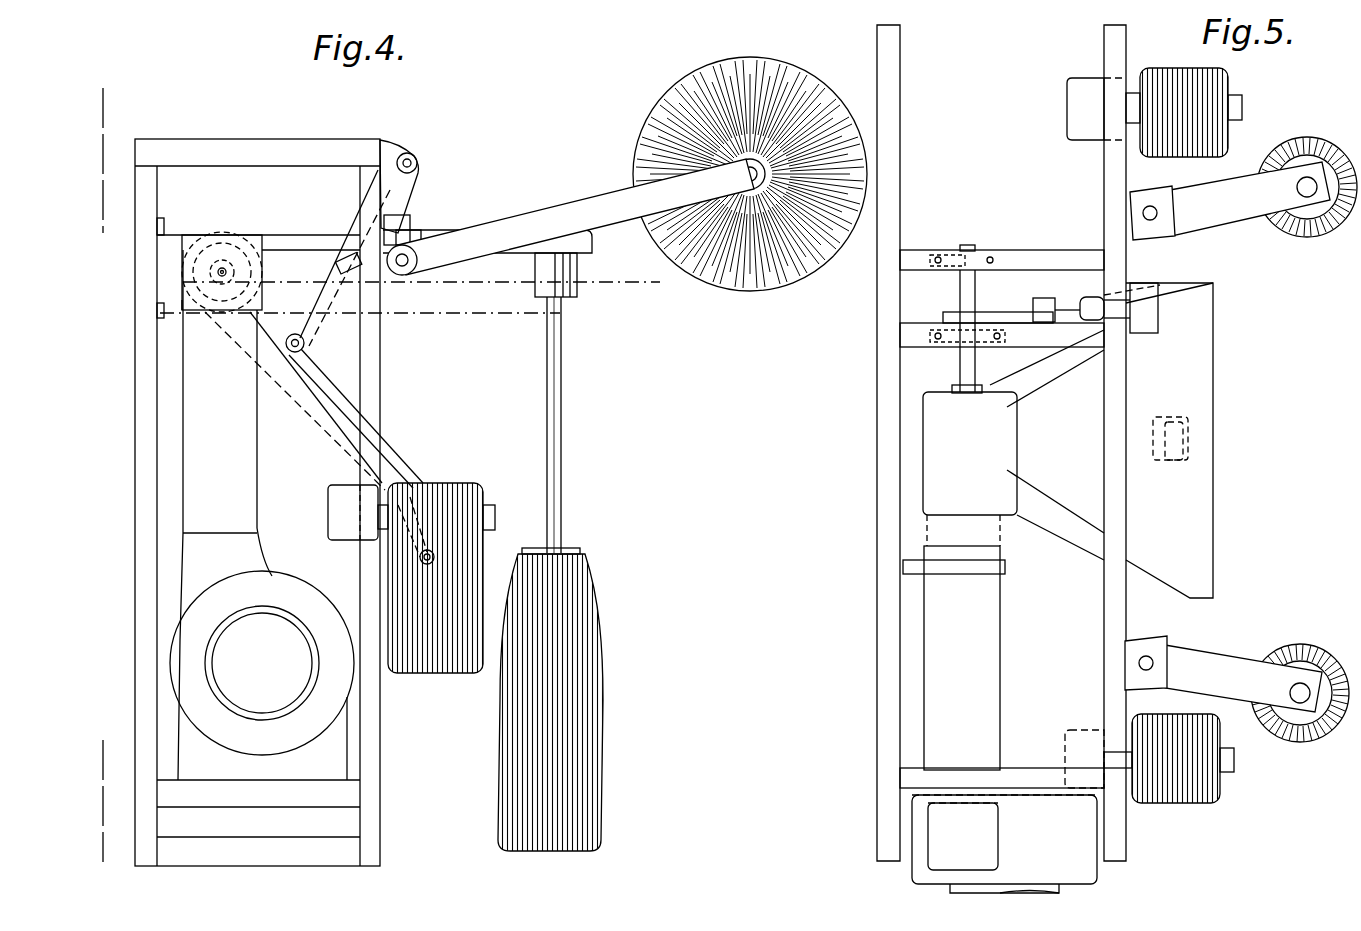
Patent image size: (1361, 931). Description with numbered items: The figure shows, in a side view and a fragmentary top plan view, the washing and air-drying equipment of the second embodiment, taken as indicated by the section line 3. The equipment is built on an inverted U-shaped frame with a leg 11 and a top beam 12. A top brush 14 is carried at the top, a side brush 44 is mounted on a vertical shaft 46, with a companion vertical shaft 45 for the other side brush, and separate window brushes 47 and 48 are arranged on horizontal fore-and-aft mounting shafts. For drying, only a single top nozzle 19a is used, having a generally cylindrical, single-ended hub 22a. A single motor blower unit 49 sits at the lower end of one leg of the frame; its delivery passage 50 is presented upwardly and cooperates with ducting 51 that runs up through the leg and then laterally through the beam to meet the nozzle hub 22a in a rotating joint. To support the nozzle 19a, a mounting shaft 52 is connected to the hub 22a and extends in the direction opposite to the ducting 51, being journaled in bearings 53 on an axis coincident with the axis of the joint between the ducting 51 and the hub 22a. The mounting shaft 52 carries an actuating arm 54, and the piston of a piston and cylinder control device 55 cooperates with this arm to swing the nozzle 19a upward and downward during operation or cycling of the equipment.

In FIG. 4, the section line 3- 3 is at (126, 116).
In FIG. 4, the leg 11 is at (126, 414).
In FIG. 4, the top beam 12 is at (297, 126).
In FIG. 5, the top beam 12 is at (874, 416).
In FIG. 4, the top brush 14 is at (692, 88).
In FIG. 4, the top nozzle 19a is at (327, 373).
In FIG. 5, the top nozzle 19a is at (1190, 512).
In FIG. 4, the cylindrical hub 22a is at (222, 236).
In FIG. 5, the cylindrical hub 22a is at (937, 468).
In FIG. 4, the side brush 44 is at (603, 662).
In FIG. 5, the side brush 44 is at (1312, 656).
In FIG. 4, the vertical shaft 45 is at (585, 205).
In FIG. 5, the vertical shaft 45 is at (1285, 235).
In FIG. 4, the vertical shaft 46 is at (554, 401).
In FIG. 5, the window brush 47 is at (1215, 80).
In FIG. 4, the window brush 48 is at (402, 676).
In FIG. 5, the window brush 48 is at (1190, 805).
In FIG. 4, the motor blower unit 49 is at (195, 661).
In FIG. 5, the motor blower unit 49 is at (1073, 856).
In FIG. 4, the delivery passage 50 is at (190, 570).
In FIG. 4, the ducting 51 is at (250, 470).
In FIG. 5, the ducting 51 is at (935, 665).
In FIG. 4, the mounting shaft 52 is at (183, 287).
In FIG. 5, the mounting shaft 52 is at (960, 362).
In FIG. 4, the bearings 53 is at (183, 268).
In FIG. 5, the bearings 53 is at (940, 252).
In FIG. 4, the actuating arm 54 is at (280, 337).
In FIG. 5, the actuating arm 54 is at (1023, 310).
In FIG. 4, the piston and cylinder control device 55 is at (398, 212).
In FIG. 5, the piston and cylinder control device 55 is at (1092, 295).